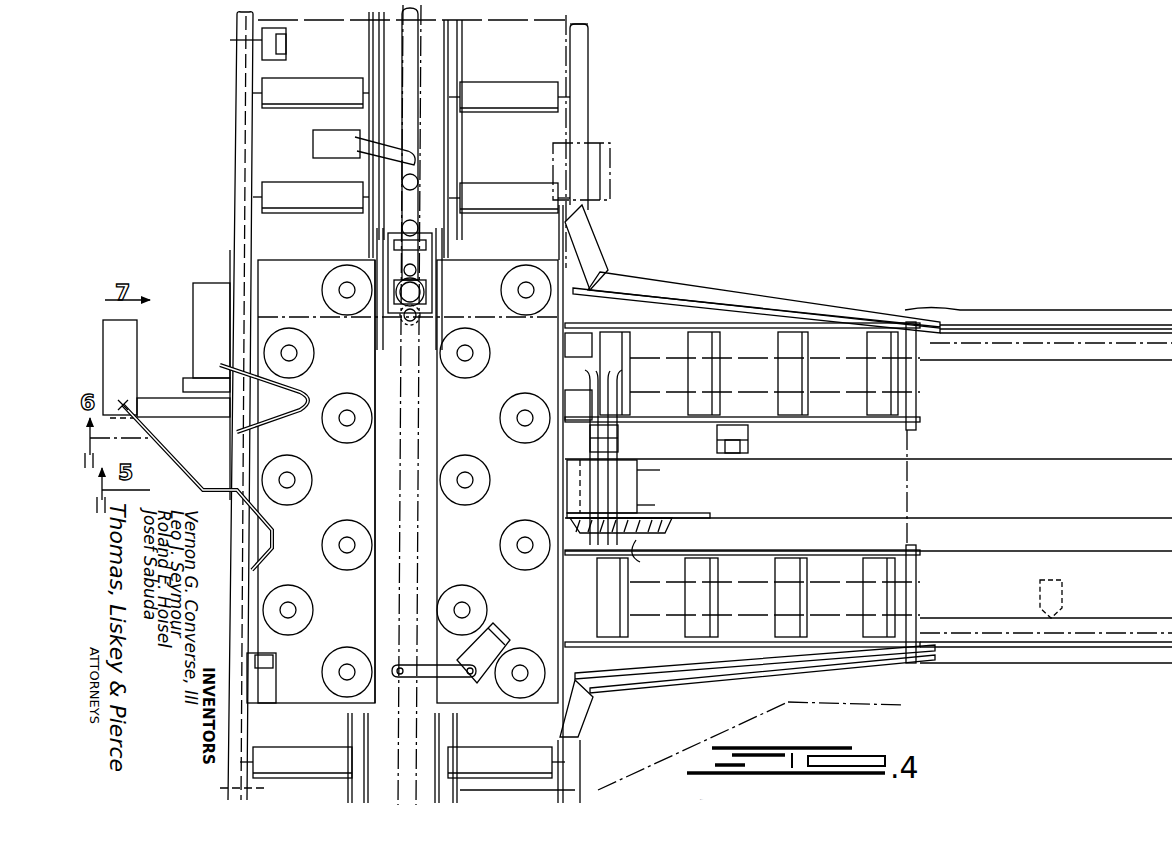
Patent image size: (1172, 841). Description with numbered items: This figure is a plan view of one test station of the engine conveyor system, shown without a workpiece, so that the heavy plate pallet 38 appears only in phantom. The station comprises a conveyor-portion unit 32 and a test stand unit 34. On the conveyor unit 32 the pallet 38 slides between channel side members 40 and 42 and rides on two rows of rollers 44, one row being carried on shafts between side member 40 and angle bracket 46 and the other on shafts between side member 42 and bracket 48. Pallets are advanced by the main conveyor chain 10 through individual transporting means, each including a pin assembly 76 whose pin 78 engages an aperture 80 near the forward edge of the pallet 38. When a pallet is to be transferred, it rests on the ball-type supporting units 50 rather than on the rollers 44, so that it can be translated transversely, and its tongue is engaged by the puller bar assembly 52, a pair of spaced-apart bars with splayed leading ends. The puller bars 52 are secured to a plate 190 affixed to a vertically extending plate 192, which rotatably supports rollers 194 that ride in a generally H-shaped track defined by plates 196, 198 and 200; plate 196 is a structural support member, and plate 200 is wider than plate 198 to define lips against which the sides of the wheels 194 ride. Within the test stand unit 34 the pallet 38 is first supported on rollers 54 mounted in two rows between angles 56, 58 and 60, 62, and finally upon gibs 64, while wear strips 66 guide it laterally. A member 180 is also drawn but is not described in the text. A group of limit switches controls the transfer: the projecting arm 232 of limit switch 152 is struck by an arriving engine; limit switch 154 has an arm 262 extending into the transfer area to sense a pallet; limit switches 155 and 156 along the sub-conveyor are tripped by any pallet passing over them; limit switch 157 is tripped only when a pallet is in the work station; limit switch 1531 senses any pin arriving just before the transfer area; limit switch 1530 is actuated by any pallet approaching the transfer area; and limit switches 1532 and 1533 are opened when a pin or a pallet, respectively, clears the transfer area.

The chain 10 is at (412, 568).
The conveyor-portion unit 32 is at (598, 96).
The test stand unit 34 is at (1003, 294).
The plate pallet 38 is at (535, 253).
The channel side member 40 is at (237, 197).
The channel side member 42 is at (578, 124).
The rollers 44 is at (304, 86).
The angle bracket 46 is at (455, 146).
The bracket 48 is at (369, 226).
The ball-type supporting units 50 is at (525, 418).
The puller bar assembly 52 is at (650, 494).
The rollers 54 is at (688, 378).
The angle 56 is at (680, 322).
The angle 58 is at (668, 412).
The angle 60 is at (880, 557).
The angle 62 is at (652, 668).
The gibs 64 is at (956, 362).
The wear strips 66 is at (785, 310).
The pin assembly 76 is at (428, 288).
The pin 78 is at (425, 298).
The aperture 80 is at (1066, 580).
The limit switch LS2 152 is at (180, 324).
The limit switch LS4 154 is at (210, 284).
The limit switch LS5 155 is at (620, 440).
The limit switch LS6 156 is at (750, 440).
The limit switch LS7 157 is at (1150, 388).
The guide bars 180 is at (468, 252).
The plate 190 is at (640, 472).
The vertically extending plate 192 is at (640, 509).
The rollers 194 is at (592, 521).
The plate 196 is at (656, 563).
The plate 198 is at (650, 534).
The plate 200 is at (660, 528).
The projecting arm 232 is at (272, 532).
The arm 262 is at (338, 388).
The limit switch LS30 1530 is at (230, 40).
The limit switch LS31 1531 is at (313, 143).
The limit switch LS32 1532 is at (540, 598).
The limit switch LS33 1533 is at (270, 703).